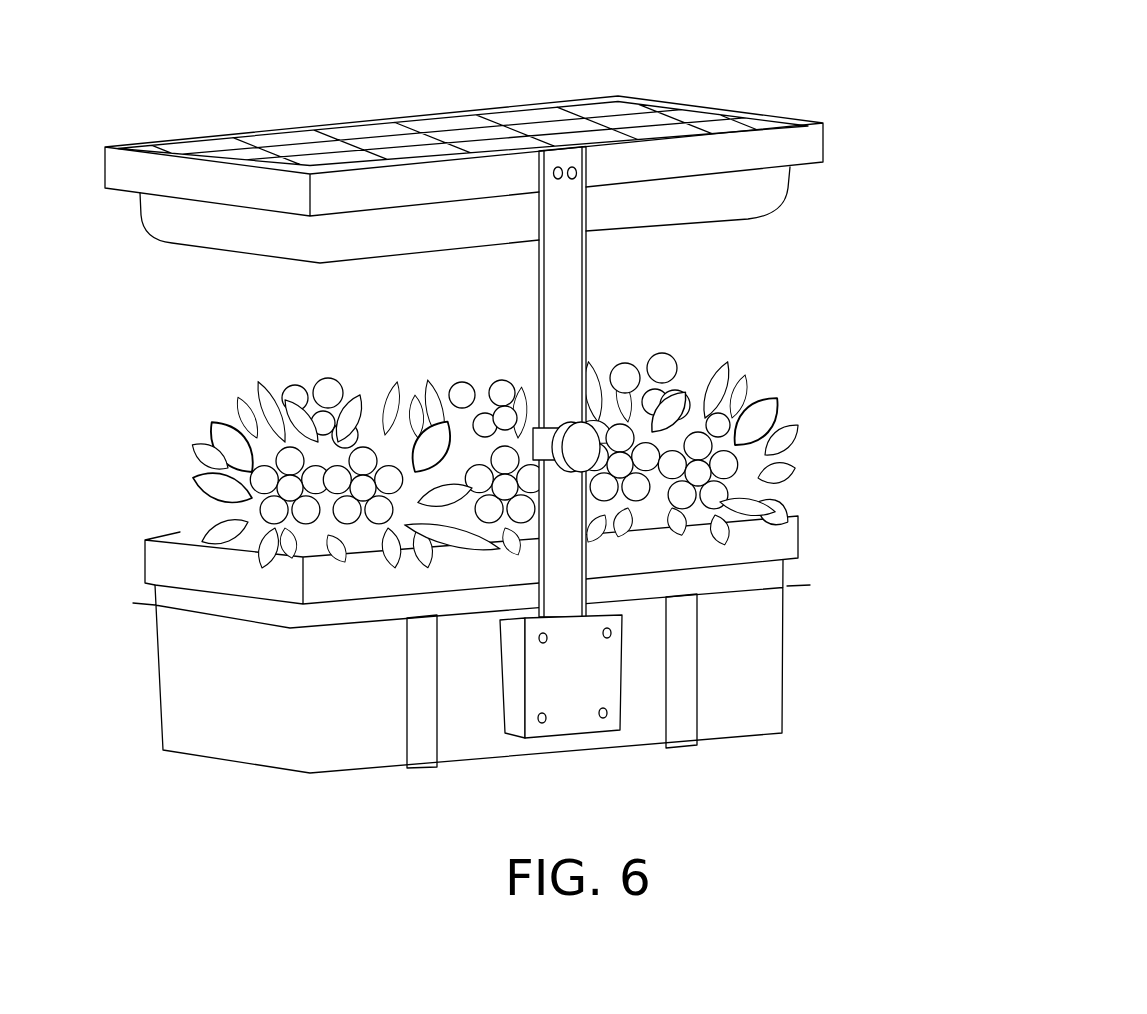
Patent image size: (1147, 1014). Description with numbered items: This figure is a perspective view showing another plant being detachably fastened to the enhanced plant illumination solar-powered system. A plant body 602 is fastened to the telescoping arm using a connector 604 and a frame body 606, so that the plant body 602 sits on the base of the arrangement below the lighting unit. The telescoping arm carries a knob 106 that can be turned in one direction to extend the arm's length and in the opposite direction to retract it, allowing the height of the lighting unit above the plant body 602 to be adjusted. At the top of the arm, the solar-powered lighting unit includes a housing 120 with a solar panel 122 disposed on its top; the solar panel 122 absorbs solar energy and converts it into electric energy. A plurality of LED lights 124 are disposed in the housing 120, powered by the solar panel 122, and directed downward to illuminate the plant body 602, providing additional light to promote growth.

The housing 120 is at (773, 158).
The solar panel 122 is at (385, 148).
The LED lights 124 is at (662, 215).
The knob 106 is at (585, 450).
The plant body 602 is at (767, 537).
The frame body 606 is at (677, 617).
The connector 604 is at (585, 653).